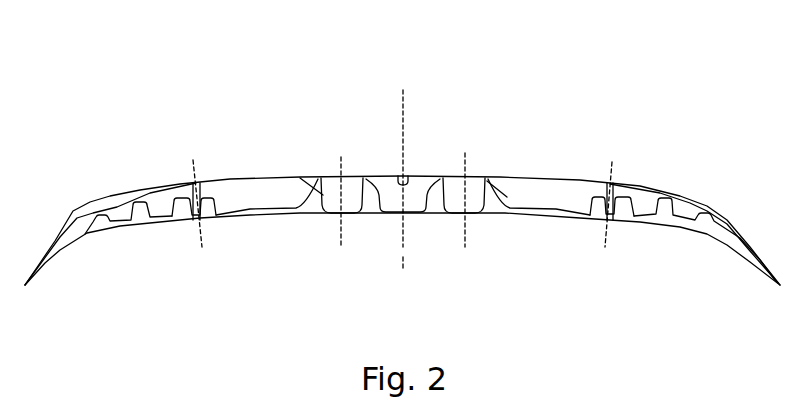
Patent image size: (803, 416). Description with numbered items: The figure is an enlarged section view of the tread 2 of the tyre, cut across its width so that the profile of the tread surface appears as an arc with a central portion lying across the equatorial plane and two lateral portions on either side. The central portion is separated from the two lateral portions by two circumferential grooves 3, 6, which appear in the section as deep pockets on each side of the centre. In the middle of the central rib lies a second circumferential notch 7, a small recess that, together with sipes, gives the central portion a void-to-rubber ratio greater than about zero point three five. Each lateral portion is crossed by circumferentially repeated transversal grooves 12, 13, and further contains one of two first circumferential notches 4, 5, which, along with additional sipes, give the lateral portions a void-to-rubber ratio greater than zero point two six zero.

The tread 2 is at (713, 106).
The circumferential groove 3 is at (328, 181).
The first circumferential notch 4 is at (208, 182).
The first circumferential notch 5 is at (640, 188).
The circumferential groove 6 is at (478, 181).
The second circumferential notch 7 is at (404, 177).
The transversal groove 12 is at (240, 181).
The transversal groove 13 is at (560, 181).